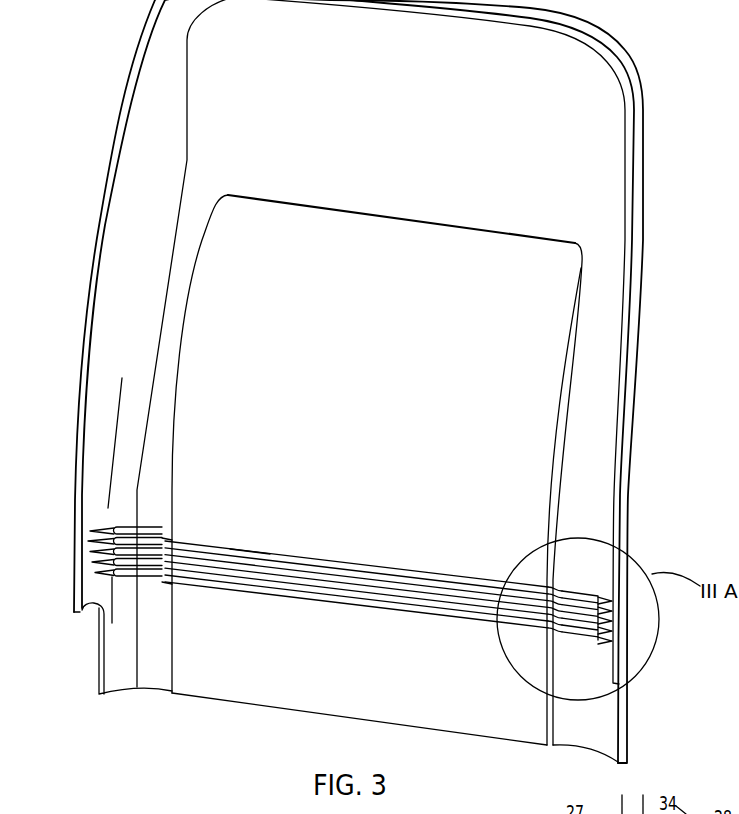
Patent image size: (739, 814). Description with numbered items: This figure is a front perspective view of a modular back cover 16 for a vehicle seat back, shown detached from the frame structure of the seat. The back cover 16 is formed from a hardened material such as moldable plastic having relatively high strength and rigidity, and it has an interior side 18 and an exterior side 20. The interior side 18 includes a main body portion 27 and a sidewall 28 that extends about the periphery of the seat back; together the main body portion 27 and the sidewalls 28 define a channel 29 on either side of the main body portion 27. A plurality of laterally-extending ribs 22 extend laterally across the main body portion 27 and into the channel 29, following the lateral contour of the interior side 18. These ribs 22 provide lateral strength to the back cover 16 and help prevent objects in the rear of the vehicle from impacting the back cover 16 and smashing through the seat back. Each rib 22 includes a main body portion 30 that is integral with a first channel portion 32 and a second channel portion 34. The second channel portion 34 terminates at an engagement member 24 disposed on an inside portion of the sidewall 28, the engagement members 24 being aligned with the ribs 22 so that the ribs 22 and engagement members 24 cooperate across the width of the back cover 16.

The modular back cover 16 is at (626, 42).
The interior side 18 is at (402, 110).
The exterior side 20 is at (646, 98).
The laterally-extending ribs 22 is at (372, 563).
The engagement members 24 is at (88, 567).
The main body portion 27 is at (337, 418).
The sidewall 28 is at (629, 387).
The channel 29 is at (140, 327).
The main body portion of rib 30 is at (246, 566).
The first channel portion 32 is at (166, 552).
The second channel portion 34 is at (134, 545).